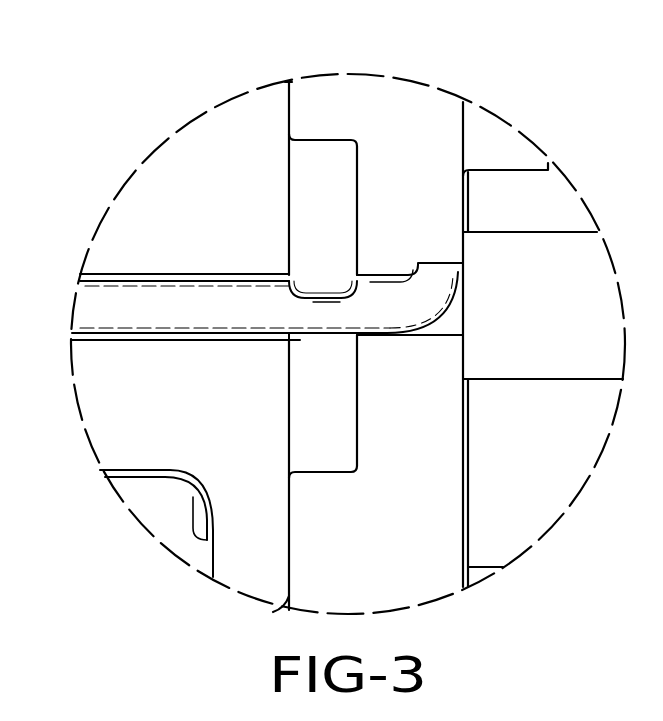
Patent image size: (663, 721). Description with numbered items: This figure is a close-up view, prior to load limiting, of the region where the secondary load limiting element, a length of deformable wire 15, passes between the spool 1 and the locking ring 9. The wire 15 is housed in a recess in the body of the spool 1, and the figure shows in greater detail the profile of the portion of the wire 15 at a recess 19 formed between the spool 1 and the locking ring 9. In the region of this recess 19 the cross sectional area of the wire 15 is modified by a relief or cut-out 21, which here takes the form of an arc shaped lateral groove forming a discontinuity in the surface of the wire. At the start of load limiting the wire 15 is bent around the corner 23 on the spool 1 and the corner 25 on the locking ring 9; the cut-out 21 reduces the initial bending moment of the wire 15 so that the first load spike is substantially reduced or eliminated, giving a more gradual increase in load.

The spool 1 is at (153, 423).
The locking ring 9 is at (389, 523).
The secondary load limiting element 15 is at (187, 300).
The recess 19 is at (327, 172).
The cut-out 21 is at (328, 300).
The corner 23 is at (288, 341).
The corner 25 is at (378, 262).